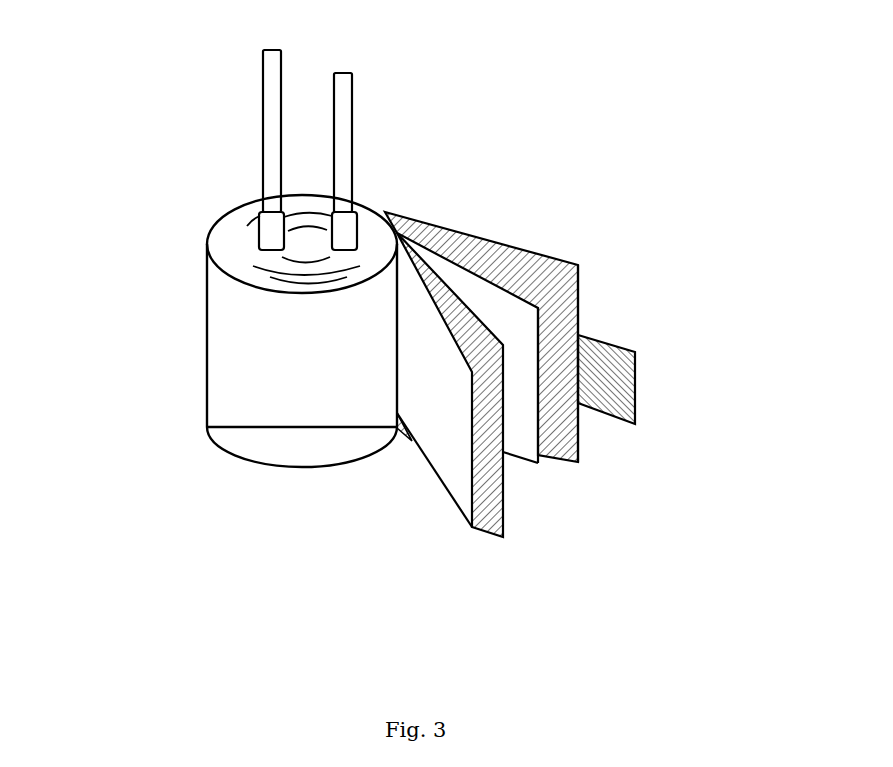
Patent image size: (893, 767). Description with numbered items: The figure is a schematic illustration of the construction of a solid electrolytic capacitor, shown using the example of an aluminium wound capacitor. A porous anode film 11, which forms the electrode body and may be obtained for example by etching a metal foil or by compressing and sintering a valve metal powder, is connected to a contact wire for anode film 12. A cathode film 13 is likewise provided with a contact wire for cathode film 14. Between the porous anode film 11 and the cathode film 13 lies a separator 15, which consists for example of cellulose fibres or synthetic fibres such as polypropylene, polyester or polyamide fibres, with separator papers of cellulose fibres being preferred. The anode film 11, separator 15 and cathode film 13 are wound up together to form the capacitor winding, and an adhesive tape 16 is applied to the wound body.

The porous anode film 11 is at (437, 426).
The contact wire for anode film 12 is at (263, 124).
The cathode film 13 is at (517, 437).
The contact wire for cathode film 14 is at (352, 98).
The separator 15 is at (457, 265).
The adhesive tape 16 is at (620, 377).